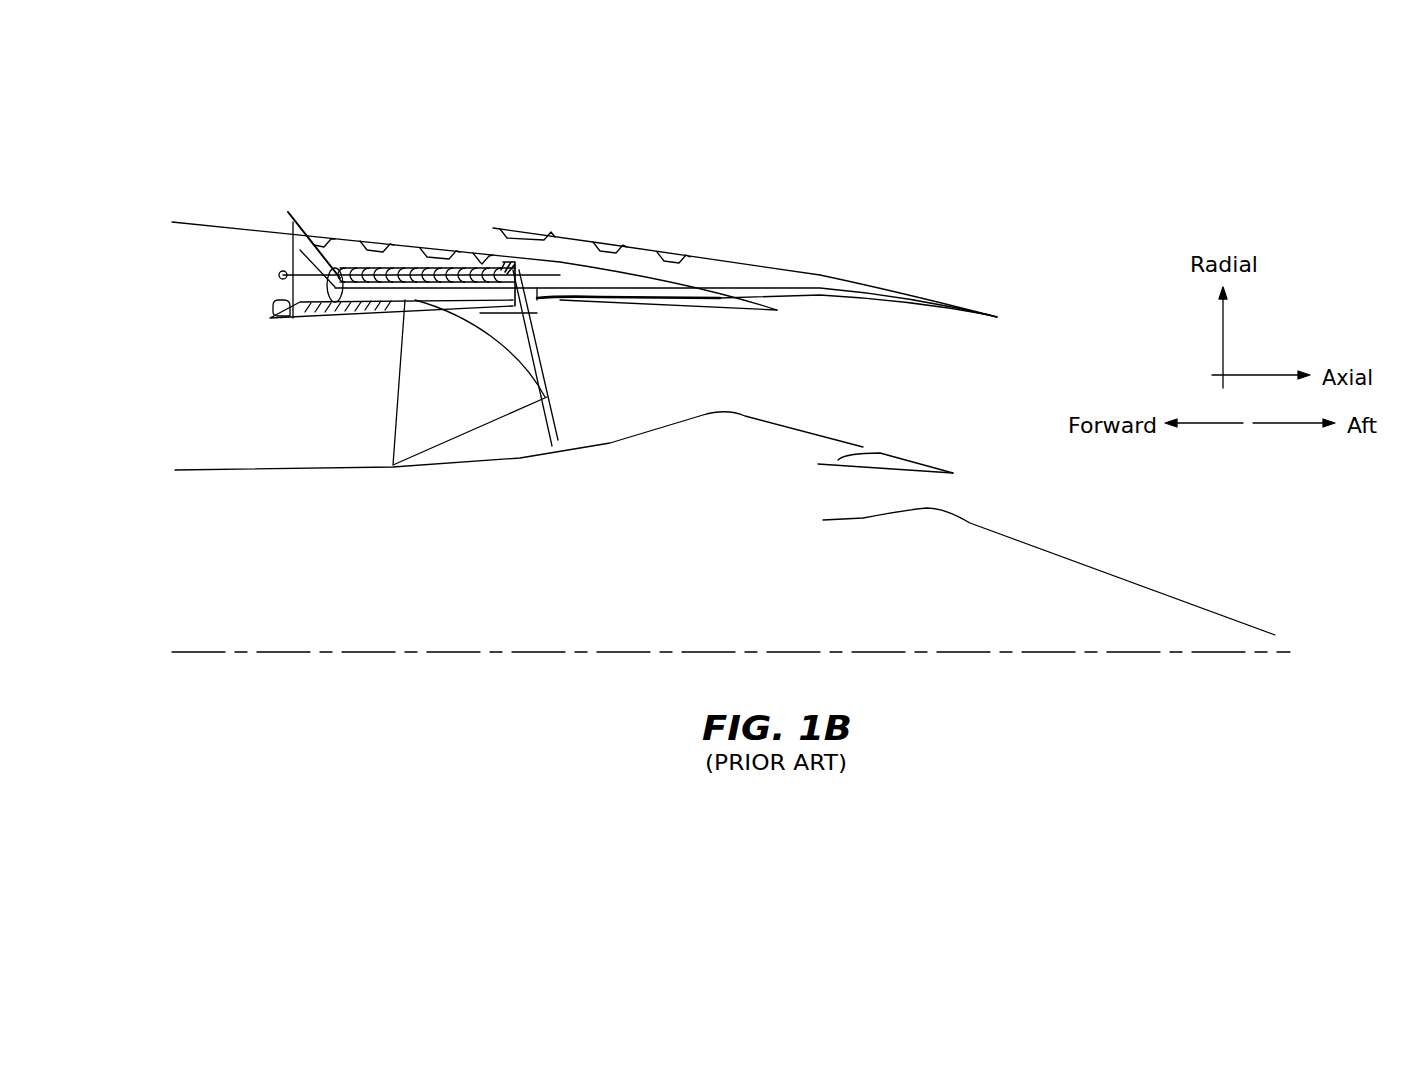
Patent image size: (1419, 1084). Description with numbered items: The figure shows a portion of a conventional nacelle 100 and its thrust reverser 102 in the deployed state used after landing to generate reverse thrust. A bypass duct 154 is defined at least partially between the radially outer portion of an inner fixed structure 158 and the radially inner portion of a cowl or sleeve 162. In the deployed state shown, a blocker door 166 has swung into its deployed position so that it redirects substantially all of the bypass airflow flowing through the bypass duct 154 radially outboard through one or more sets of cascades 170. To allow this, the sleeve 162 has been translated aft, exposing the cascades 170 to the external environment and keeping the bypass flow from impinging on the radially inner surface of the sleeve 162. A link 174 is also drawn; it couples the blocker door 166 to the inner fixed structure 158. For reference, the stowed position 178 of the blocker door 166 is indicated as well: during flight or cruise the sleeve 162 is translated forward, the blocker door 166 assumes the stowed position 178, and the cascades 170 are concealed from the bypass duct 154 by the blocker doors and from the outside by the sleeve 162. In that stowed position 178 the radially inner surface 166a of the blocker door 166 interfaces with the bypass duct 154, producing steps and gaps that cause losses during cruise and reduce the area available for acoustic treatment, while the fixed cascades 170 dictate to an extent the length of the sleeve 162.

The nacelle 100 is at (985, 185).
The thrust reverser 102 is at (1046, 544).
The bypass duct 154 is at (632, 348).
The inner fixed structure 158 is at (750, 418).
The cowl/sleeve 162 is at (647, 238).
The blocker door 166 is at (549, 397).
The radially inner surface of blocker door 166a is at (540, 360).
The cascades 170 is at (423, 266).
The link 174 is at (462, 438).
The stowed position 178 is at (382, 320).